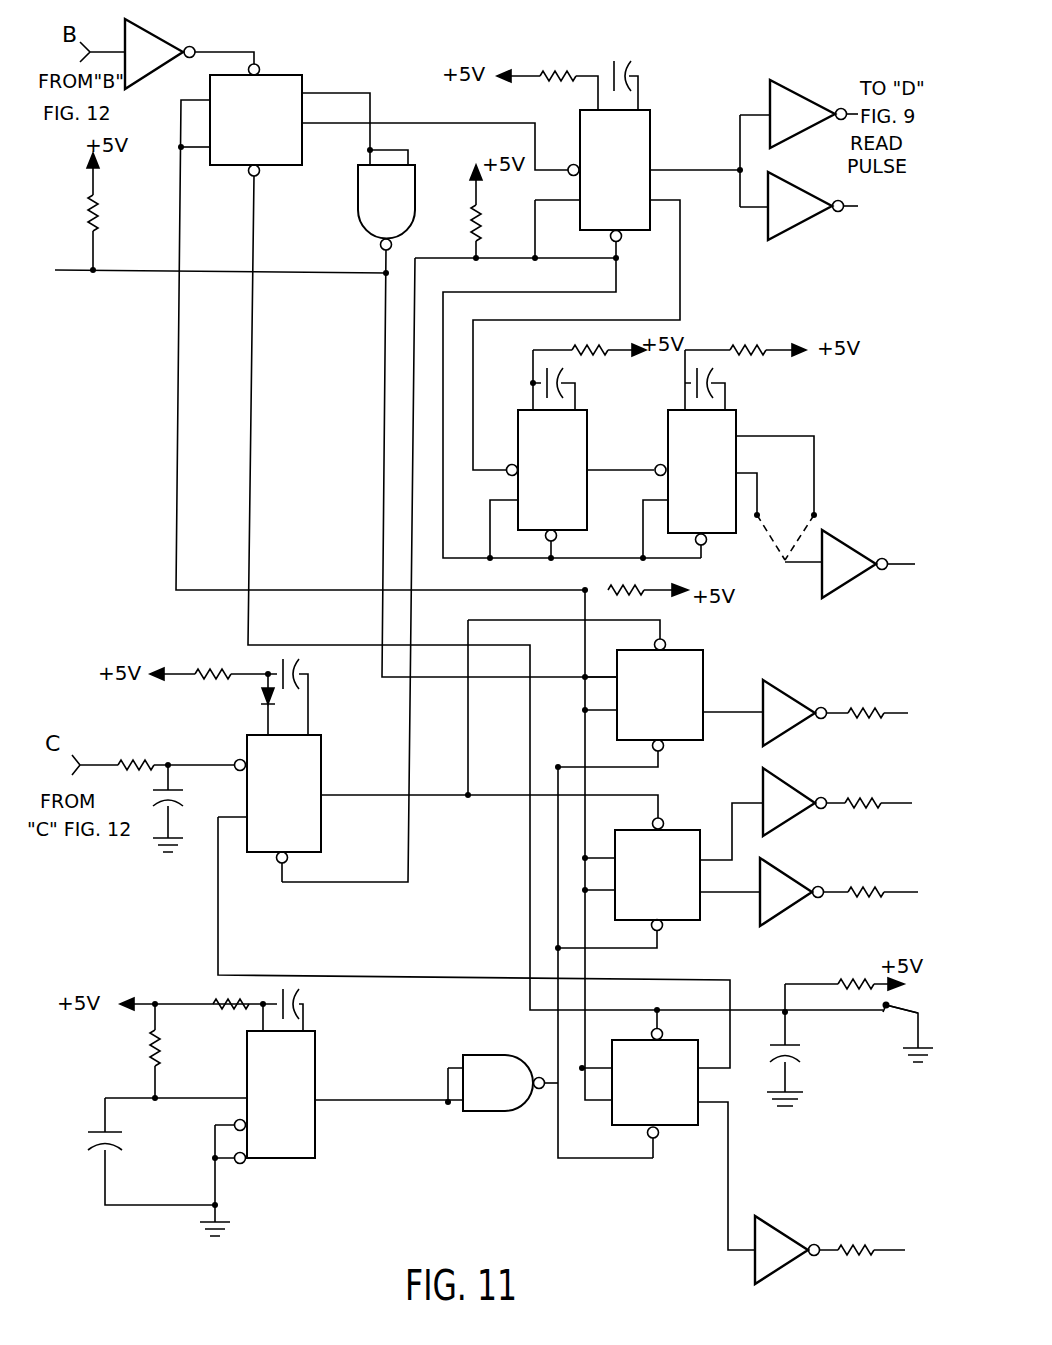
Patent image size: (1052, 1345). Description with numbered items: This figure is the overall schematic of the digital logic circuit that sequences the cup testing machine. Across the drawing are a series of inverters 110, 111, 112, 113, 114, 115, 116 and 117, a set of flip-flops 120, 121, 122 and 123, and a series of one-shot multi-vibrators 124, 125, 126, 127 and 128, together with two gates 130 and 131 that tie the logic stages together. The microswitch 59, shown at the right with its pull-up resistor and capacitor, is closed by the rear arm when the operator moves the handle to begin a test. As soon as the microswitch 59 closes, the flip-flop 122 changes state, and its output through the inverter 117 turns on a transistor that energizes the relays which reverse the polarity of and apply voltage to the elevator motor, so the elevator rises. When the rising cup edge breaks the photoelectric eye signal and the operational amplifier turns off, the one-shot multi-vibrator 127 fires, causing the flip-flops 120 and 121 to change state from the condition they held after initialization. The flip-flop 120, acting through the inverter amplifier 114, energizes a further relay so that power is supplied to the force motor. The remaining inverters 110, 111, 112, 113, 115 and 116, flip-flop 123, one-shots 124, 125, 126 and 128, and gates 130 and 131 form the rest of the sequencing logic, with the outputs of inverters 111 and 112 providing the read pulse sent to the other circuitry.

The inverter 110 is at (170, 40).
The inverter 111 is at (770, 80).
The inverter 112 is at (793, 230).
The inverter 113 is at (843, 538).
The inverter amplifier 114 is at (787, 687).
The inverter 115 is at (785, 778).
The inverter 116 is at (783, 867).
The inverter 117 is at (770, 1218).
The flip-flop 120 is at (708, 663).
The flip-flop 121 is at (680, 828).
The flip-flop 122 is at (675, 1130).
The flip-flop 123 is at (283, 72).
The one-shot multi-vibrator 124 is at (652, 133).
The one-shot multi-vibrator 125 is at (590, 427).
The one-shot multi-vibrator 126 is at (738, 425).
The one-shot multi-vibrator 127 is at (322, 752).
The one-shot multi-vibrator 128 is at (317, 1058).
The NAND gate 130 is at (358, 182).
The NAND gate 131 is at (483, 1117).
The microswitch 59 is at (856, 1018).